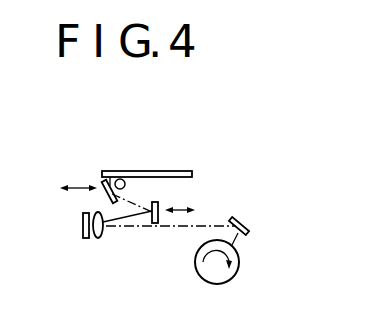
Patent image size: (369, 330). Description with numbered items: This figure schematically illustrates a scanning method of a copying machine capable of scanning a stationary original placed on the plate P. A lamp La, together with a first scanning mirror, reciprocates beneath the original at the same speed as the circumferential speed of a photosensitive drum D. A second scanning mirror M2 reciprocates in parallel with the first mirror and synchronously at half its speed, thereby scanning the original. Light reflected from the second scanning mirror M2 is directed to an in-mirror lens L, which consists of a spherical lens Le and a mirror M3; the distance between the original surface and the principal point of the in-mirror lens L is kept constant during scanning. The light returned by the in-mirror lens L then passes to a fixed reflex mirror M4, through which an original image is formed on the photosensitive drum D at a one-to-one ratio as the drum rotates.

The lamp La is at (123, 180).
The plate (original document platen) P is at (168, 172).
The second scanning mirror M2 is at (158, 203).
The mirror M3 is at (85, 239).
The spherical lens Le is at (111, 245).
The in-mirror lens L is at (95, 263).
The fixed reflex mirror M4 is at (262, 235).
The photosensitive drum D is at (238, 276).